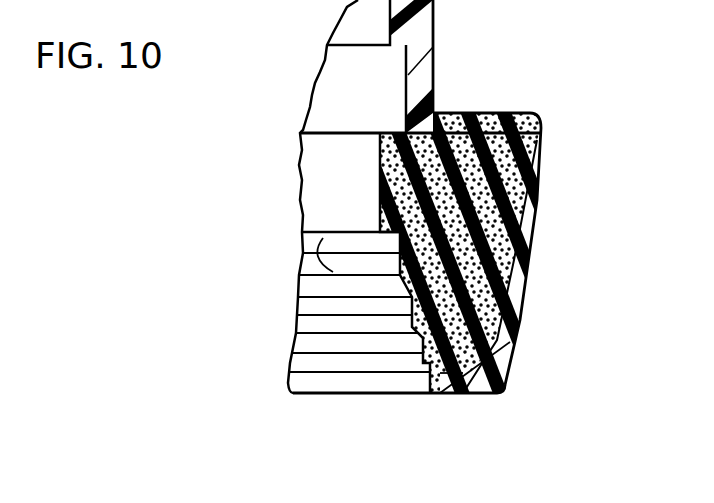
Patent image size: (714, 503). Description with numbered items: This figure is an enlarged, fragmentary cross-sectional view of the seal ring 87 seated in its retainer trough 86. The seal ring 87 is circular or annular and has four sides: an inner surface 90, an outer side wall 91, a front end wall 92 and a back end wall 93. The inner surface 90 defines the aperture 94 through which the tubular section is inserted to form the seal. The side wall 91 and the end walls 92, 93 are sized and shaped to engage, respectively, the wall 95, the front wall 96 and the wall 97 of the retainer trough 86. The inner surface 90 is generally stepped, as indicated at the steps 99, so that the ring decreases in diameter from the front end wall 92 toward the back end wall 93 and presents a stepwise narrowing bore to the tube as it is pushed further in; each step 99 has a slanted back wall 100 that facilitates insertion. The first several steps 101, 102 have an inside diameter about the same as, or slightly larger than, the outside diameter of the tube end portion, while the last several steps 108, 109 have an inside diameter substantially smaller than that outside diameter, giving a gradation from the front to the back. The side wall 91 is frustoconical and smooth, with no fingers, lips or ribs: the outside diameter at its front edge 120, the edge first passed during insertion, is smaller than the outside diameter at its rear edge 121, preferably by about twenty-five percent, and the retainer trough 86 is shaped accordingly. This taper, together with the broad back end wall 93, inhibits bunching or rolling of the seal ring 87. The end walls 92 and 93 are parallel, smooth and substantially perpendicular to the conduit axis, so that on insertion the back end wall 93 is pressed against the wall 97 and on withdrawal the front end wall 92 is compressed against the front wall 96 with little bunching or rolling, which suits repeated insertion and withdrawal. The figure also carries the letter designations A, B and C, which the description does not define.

The retainer trough 86 is at (497, 247).
The seal ring 87 is at (510, 262).
The inner surface 90 is at (388, 343).
The side wall 91 is at (503, 300).
The front end wall 92 is at (472, 393).
The back end wall 93 is at (476, 133).
The aperture 94 is at (347, 383).
The wall 95 is at (482, 340).
The front wall 96 is at (430, 360).
The wall 97 is at (440, 136).
The steps 99 is at (345, 238).
The slanted back wall 100 is at (370, 234).
The step 101 is at (300, 365).
The step 102 is at (328, 342).
The step 108 is at (395, 190).
The step 109 is at (357, 285).
The front edge 120 is at (485, 365).
The rear edge 121 is at (541, 125).
The region A is at (545, 167).
The region B is at (405, 150).
The region C is at (303, 240).